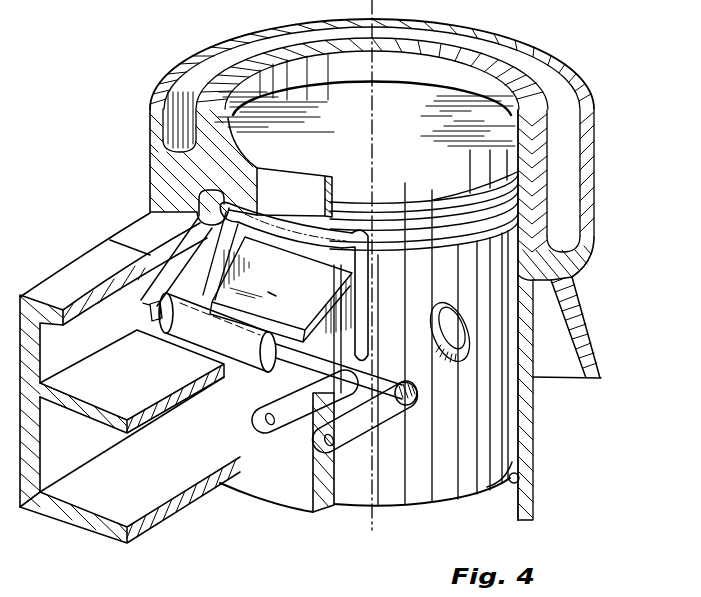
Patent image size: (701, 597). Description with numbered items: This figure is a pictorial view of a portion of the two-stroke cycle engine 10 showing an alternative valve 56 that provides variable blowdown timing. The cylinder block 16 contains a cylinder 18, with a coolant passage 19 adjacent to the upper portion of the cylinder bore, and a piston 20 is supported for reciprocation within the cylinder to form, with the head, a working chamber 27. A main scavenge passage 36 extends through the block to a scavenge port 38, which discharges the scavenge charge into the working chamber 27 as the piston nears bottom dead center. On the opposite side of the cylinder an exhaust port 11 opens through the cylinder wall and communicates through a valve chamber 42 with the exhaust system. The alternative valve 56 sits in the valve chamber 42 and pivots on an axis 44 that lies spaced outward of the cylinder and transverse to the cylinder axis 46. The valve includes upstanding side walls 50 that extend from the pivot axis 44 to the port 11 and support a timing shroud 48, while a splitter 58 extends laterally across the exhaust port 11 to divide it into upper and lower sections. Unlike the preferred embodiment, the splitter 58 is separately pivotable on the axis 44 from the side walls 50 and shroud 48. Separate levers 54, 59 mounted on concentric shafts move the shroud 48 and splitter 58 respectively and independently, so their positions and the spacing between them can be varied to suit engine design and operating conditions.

The two-stroke cycle engine 10 is at (158, 70).
The exhaust port 11 is at (339, 216).
The cylinder block 16 is at (592, 252).
The cylinder 18 is at (522, 484).
The coolant passage 19 is at (565, 196).
The piston 20 is at (358, 492).
The working chamber 27 is at (497, 92).
The main scavenge passage 36 is at (563, 352).
The scavenge port 38 is at (560, 291).
The valve chamber 42 is at (216, 212).
The axis 44 is at (418, 402).
The cylinder axis 46 is at (372, 138).
The timing shroud 48 is at (328, 263).
The side walls 50 is at (230, 265).
The actuating lever 54 is at (256, 430).
The alternative valve 56 is at (246, 372).
The splitter 58 is at (272, 294).
The lever 59 is at (336, 448).